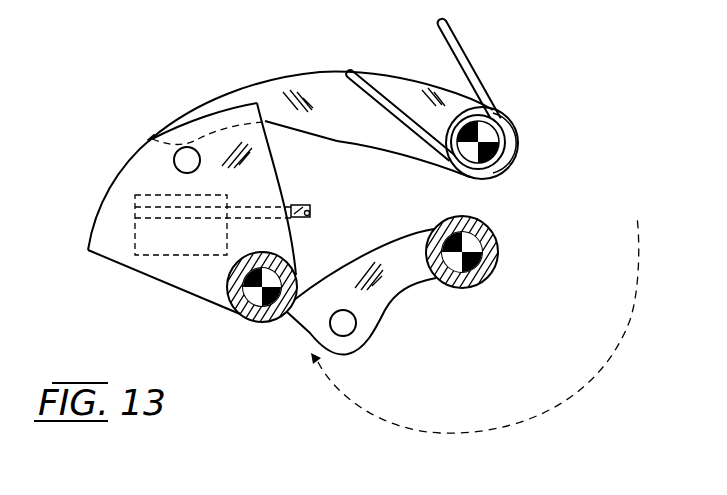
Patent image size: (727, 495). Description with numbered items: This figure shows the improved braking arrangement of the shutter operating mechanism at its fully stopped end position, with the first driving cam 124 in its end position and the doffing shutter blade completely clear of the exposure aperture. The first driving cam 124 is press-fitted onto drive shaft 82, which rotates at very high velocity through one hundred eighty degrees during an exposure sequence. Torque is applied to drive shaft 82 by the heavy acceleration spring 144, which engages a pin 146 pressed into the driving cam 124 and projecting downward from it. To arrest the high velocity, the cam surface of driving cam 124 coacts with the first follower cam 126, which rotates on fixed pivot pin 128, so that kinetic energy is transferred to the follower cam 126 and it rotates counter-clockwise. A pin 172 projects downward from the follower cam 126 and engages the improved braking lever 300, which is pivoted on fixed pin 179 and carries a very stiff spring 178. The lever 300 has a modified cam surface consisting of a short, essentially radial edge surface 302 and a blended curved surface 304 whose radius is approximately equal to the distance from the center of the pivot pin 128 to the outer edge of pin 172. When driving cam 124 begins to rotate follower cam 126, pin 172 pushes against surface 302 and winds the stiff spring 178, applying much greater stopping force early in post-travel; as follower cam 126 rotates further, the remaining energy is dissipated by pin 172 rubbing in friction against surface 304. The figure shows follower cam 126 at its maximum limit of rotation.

The improved braking lever 300 is at (266, 94).
The radial edge surface 302 is at (364, 144).
The blended curved surface 304 is at (301, 132).
The stiff spring 178 is at (466, 56).
The fixed pin 179 is at (496, 127).
The pin 172 is at (187, 160).
The acceleration spring 144 is at (311, 206).
The first follower cam 126 is at (182, 277).
The fixed pivot pin 128 is at (245, 312).
The first driving cam 124 is at (381, 298).
The pin 146 is at (350, 330).
The drive shaft 82 is at (470, 245).